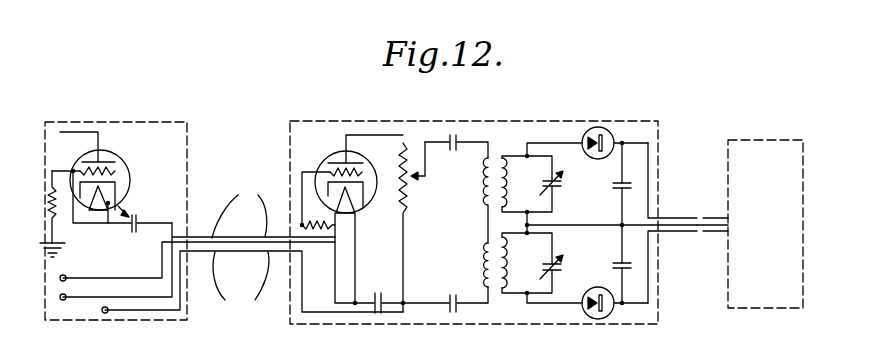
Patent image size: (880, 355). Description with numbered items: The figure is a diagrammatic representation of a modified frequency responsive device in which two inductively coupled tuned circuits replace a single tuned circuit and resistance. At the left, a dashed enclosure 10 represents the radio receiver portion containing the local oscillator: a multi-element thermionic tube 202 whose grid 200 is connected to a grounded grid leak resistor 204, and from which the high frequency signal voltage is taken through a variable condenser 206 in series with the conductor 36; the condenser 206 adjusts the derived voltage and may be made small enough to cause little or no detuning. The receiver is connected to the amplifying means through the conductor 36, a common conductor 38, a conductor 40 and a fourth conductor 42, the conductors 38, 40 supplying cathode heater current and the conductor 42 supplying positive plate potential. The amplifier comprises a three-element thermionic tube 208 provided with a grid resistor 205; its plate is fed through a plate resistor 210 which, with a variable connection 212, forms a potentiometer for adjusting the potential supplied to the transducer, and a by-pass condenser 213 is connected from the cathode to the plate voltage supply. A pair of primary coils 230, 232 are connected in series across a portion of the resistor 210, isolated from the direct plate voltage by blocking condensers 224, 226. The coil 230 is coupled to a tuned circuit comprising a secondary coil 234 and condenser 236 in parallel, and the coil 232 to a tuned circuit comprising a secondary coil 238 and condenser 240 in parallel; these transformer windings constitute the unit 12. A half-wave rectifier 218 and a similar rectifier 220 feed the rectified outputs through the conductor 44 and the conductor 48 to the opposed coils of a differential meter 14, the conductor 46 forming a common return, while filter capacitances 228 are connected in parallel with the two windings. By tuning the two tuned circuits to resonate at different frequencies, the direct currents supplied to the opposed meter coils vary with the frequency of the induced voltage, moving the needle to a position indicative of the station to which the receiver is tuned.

The signal source unit 10 is at (168, 163).
The cabinet 12 is at (516, 210).
The utilization device 14 is at (784, 298).
The conductor 36 is at (246, 238).
The common conductor 38 is at (245, 252).
The conductor 40 is at (239, 205).
The fourth conductor 42 is at (252, 282).
The conductor 44 is at (665, 217).
The conductor 46 is at (680, 224).
The conductor 48 is at (690, 234).
The grid 200 is at (131, 177).
The multi-element thermionic tube 202 is at (118, 152).
The grid leak resistor 204 is at (50, 187).
The grid resistor 205 is at (321, 233).
The variable condenser 206 is at (133, 233).
The three-element thermionic tube 208 is at (368, 207).
The plate resistor 210 is at (402, 222).
The variable connection 212 is at (416, 179).
The by-pass condenser 213 is at (379, 294).
The rectifier 218 is at (612, 116).
The rectifier 220 is at (600, 319).
The blocking condenser 224 is at (457, 137).
The blocking condenser 226 is at (458, 312).
The filter capacitances 228 is at (612, 266).
The primary coil 230 is at (482, 180).
The primary coil 232 is at (482, 263).
The secondary coil 234 is at (527, 183).
The condenser 236 is at (562, 173).
The secondary coil 238 is at (510, 280).
The condenser 240 is at (562, 254).